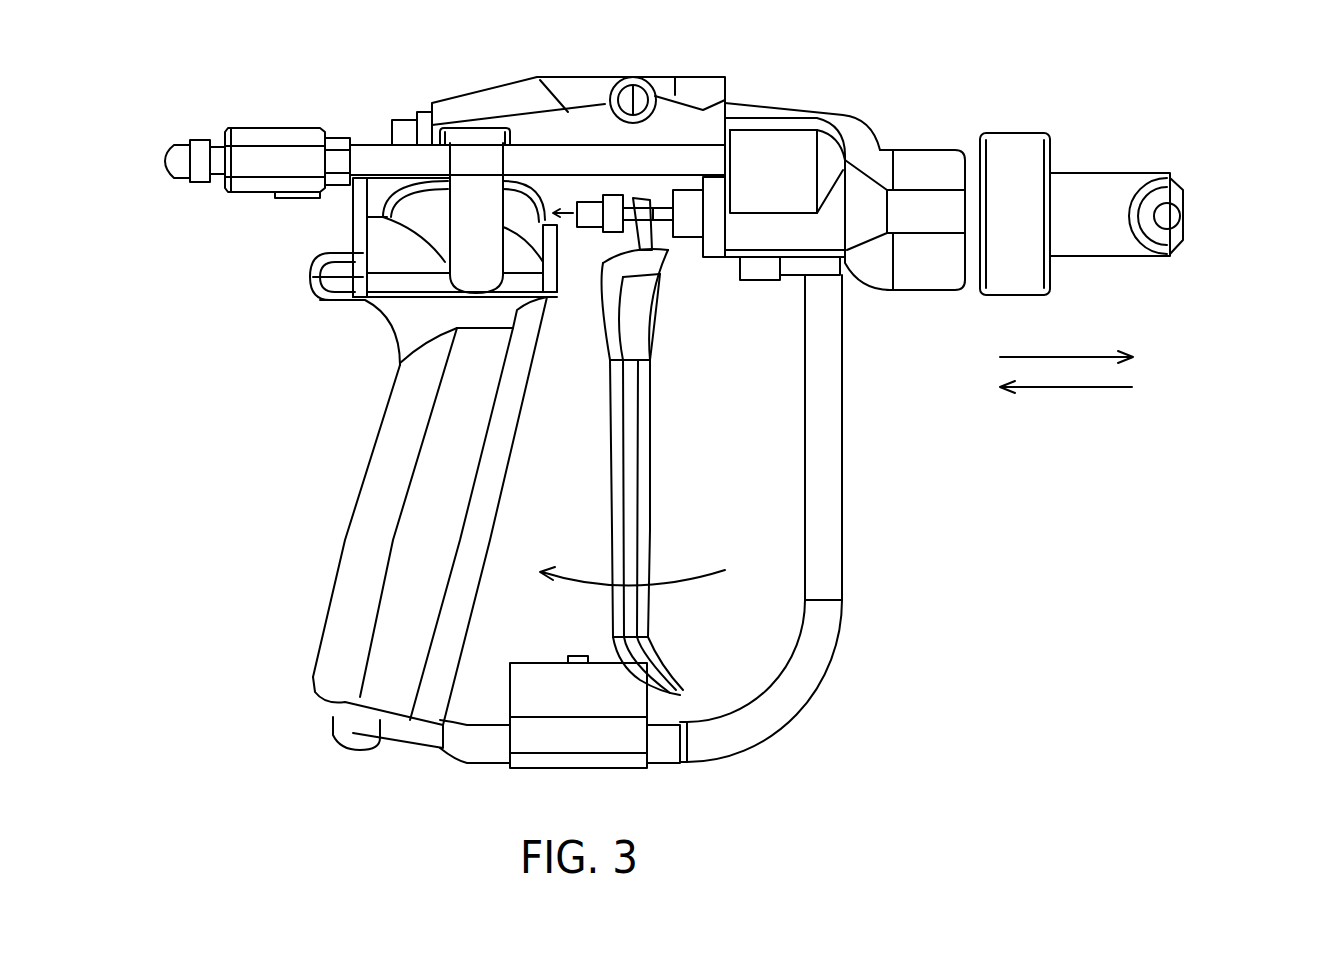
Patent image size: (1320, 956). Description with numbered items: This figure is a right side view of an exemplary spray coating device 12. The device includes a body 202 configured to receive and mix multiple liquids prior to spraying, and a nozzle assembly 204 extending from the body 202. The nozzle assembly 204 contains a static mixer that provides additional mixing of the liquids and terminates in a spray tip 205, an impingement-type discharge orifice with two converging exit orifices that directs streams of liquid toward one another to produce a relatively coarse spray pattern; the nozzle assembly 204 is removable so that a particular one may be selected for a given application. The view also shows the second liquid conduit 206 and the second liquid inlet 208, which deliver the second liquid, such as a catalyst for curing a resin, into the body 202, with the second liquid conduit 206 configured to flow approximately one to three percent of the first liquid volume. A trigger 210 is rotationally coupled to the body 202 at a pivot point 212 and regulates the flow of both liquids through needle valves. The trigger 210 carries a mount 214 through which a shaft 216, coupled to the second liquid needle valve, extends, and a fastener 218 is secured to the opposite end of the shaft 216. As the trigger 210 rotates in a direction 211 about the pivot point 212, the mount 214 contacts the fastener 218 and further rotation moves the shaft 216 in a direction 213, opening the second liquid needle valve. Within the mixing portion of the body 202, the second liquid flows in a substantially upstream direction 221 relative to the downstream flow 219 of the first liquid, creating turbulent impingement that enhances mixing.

The spray coating device 12 is at (910, 58).
The body 202 is at (777, 108).
The nozzle assembly 204 is at (1107, 172).
The spray tip 205 is at (1175, 200).
The second liquid conduit 206 is at (372, 142).
The second liquid inlet 208 is at (170, 148).
The trigger 210 is at (653, 474).
The direction 211 is at (685, 582).
The pivot point 212 is at (648, 77).
The direction 213 is at (576, 178).
The mount 214 is at (605, 283).
The shaft 216 is at (667, 250).
The fastener 218 is at (588, 232).
The downstream flow 219 is at (1060, 357).
The upstream direction 221 is at (1070, 387).